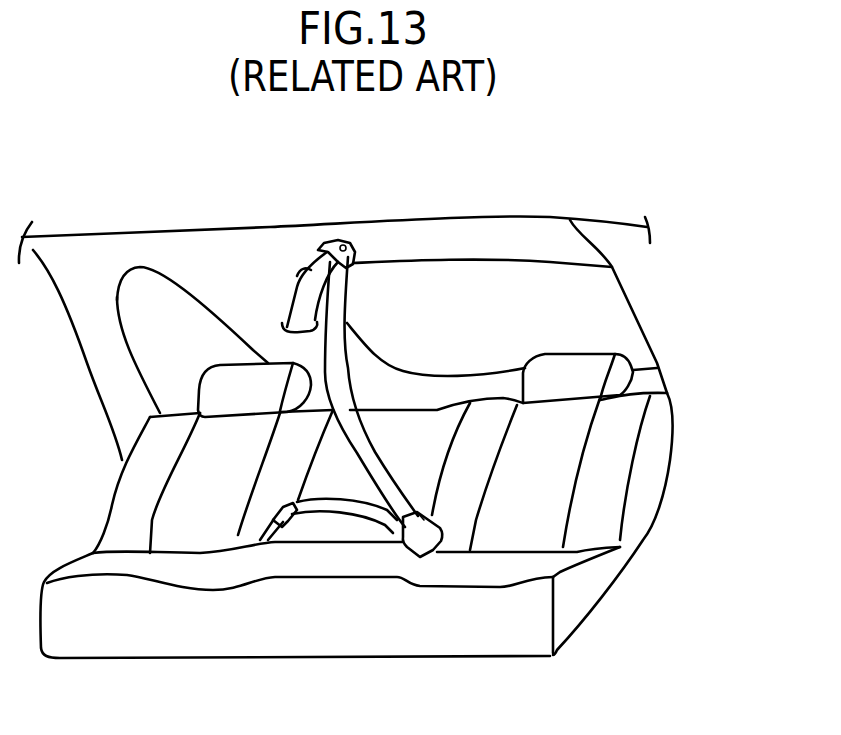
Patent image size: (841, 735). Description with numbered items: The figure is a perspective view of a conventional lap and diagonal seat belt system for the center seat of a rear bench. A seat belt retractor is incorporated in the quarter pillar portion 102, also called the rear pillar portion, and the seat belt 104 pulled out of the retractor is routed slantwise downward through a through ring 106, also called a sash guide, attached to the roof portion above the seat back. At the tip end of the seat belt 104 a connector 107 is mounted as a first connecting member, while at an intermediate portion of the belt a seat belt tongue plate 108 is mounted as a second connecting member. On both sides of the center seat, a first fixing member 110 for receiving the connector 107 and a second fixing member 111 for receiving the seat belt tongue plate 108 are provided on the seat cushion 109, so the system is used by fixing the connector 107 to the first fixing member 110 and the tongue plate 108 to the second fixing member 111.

The quarter pillar portion 102 is at (235, 247).
The seat belt 104 is at (387, 480).
The through ring 106 is at (334, 240).
The connector 107 is at (290, 533).
The seat belt tongue plate 108 is at (413, 540).
The seat cushion 109 is at (567, 617).
The first fixing member 110 is at (277, 517).
The second fixing member 111 is at (430, 544).